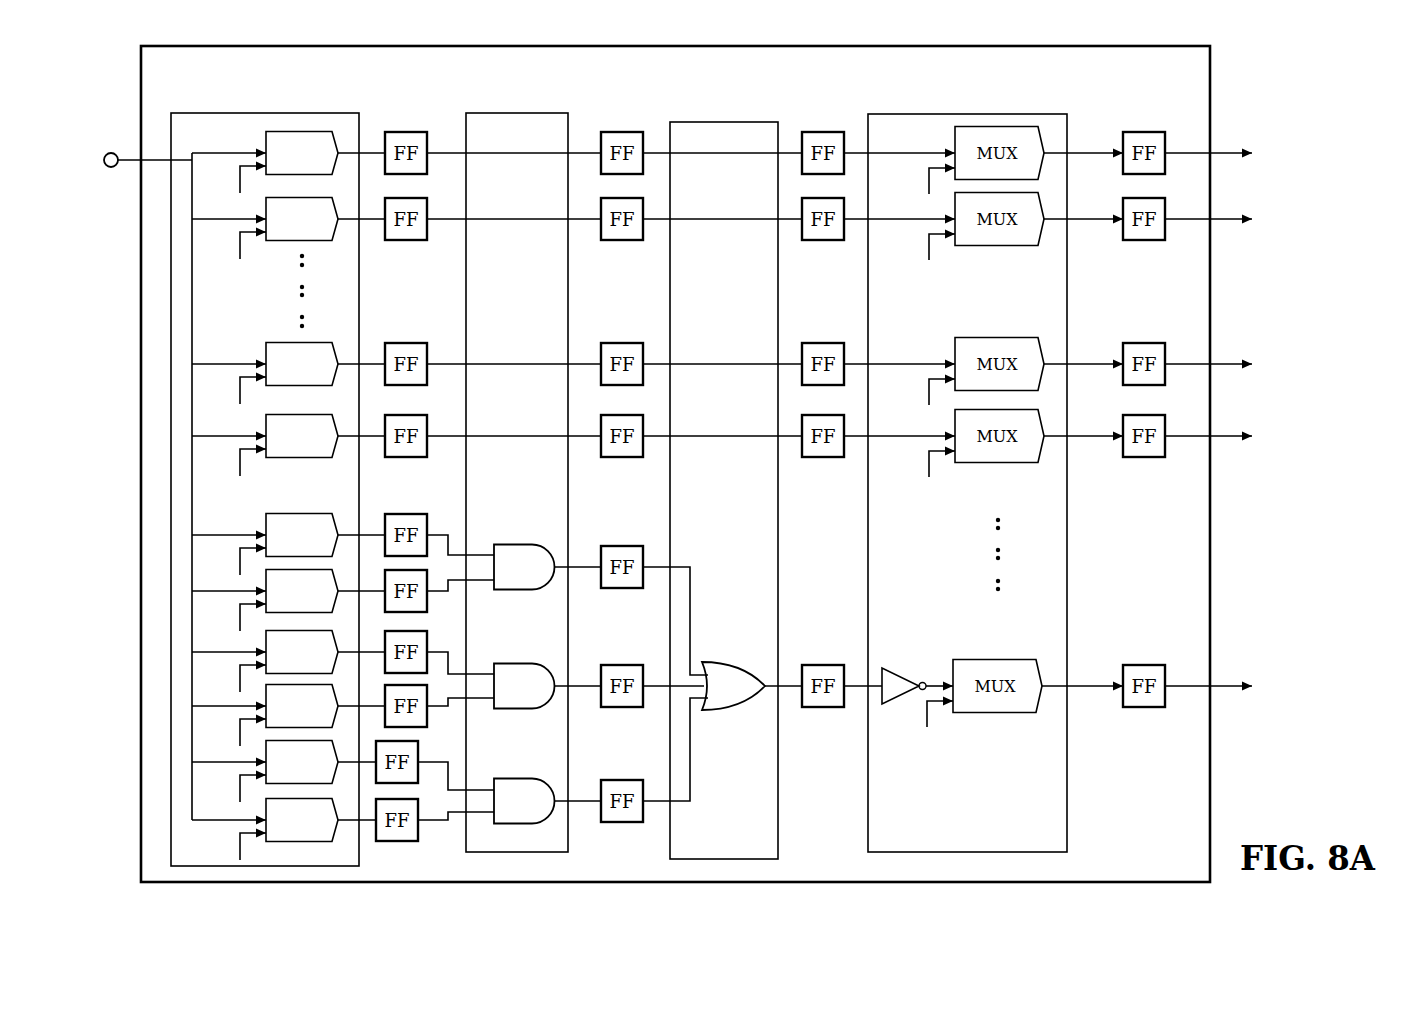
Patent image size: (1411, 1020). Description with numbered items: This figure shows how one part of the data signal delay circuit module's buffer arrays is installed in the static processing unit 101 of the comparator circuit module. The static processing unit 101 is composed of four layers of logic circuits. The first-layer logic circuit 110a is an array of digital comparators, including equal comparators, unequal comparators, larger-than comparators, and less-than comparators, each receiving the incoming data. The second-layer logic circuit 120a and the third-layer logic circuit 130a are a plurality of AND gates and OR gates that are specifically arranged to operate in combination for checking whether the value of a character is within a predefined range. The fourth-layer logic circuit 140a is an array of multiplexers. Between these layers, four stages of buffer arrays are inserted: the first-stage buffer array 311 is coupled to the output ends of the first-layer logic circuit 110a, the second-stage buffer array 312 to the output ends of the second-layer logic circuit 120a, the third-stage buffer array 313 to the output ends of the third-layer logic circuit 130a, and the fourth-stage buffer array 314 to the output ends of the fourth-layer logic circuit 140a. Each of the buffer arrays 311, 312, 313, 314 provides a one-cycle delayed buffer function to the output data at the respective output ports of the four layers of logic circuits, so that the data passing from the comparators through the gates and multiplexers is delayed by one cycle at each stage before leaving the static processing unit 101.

The static processing unit 101 is at (141, 342).
The first-layer logic circuit 110a is at (254, 108).
The first-stage buffer array 311 is at (394, 123).
The second-layer logic circuit 120a is at (544, 114).
The second-stage buffer array 312 is at (617, 121).
The third-layer logic circuit 130a is at (724, 116).
The third-stage buffer array 313 is at (810, 119).
The fourth-layer logic circuit 140a is at (964, 116).
The fourth-stage buffer array 314 is at (1137, 119).